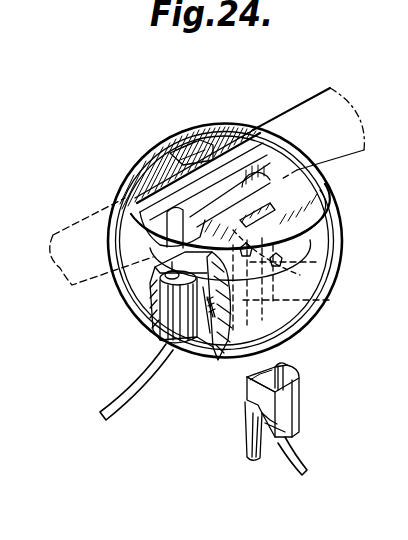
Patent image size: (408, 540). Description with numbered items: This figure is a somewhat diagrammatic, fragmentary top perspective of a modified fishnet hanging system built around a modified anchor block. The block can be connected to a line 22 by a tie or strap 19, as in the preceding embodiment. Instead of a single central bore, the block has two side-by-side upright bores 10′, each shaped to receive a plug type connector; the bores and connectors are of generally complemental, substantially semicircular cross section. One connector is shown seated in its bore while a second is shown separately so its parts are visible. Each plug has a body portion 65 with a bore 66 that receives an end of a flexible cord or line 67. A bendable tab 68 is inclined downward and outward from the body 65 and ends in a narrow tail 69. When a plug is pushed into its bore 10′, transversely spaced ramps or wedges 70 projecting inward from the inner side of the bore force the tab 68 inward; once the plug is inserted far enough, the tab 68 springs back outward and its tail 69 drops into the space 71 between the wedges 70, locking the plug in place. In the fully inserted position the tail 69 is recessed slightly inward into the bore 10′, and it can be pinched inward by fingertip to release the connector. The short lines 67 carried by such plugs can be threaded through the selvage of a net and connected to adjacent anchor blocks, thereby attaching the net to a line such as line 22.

The upright bore 10′ is at (280, 171).
The line 22 is at (310, 95).
The tie or strap 19 is at (240, 127).
The ramp or wedge 70 is at (300, 214).
The space 71 is at (330, 243).
The bore 66 is at (285, 367).
The body portion 65 is at (300, 418).
The bendable tab 68 is at (246, 401).
The tail 69 is at (247, 452).
The flexible cord or line 67 is at (123, 410).